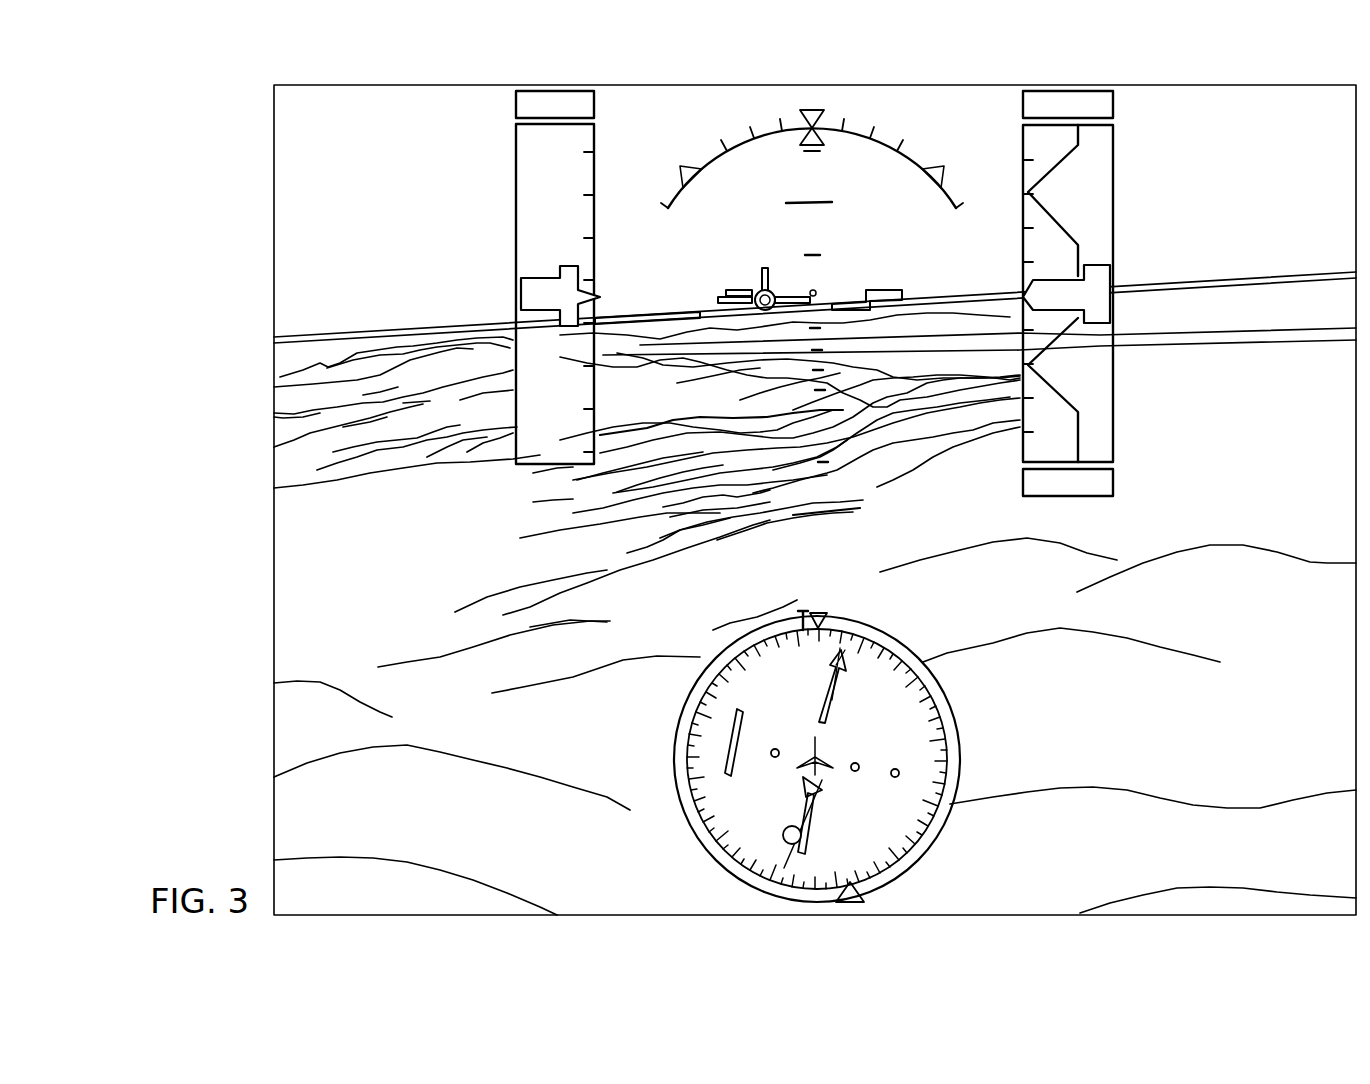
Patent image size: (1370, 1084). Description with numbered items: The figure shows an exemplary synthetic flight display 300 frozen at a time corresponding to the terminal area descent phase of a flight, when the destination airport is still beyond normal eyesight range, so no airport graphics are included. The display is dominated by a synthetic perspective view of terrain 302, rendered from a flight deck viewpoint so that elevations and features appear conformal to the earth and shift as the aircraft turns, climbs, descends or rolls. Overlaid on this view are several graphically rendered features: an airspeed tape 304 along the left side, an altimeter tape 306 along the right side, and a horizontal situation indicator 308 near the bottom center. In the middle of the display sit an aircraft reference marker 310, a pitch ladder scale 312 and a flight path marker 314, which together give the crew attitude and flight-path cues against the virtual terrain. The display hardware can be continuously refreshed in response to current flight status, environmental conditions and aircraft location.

The synthetic flight display 300 is at (245, 185).
The terrain 302 is at (1190, 632).
The airspeed tape 304 is at (515, 188).
The altimeter tape 306 is at (1122, 166).
The horizontal situation indicator 308 is at (958, 718).
The aircraft reference marker 310 is at (738, 290).
The pitch ladder scale 312 is at (826, 528).
The flight path marker 314 is at (766, 270).